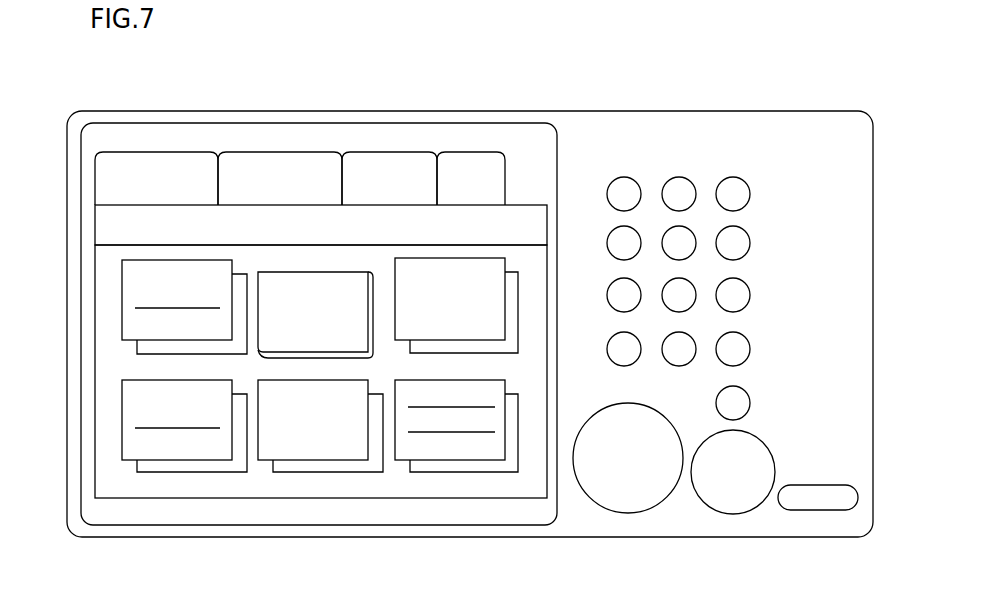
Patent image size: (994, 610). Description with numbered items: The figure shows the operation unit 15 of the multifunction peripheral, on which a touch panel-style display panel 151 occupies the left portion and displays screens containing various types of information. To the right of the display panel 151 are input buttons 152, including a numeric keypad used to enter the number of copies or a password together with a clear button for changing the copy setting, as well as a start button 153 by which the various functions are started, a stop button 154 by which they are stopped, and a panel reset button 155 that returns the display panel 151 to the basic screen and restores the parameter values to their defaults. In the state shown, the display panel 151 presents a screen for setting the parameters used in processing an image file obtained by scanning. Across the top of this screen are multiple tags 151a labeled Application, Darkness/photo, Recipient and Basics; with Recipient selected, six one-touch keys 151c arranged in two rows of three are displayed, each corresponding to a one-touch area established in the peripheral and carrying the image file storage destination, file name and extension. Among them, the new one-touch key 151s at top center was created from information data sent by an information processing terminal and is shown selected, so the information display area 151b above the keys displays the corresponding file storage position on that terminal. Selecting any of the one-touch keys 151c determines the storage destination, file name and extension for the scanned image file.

The operation unit 15 is at (621, 110).
The display panel 151 is at (499, 512).
The tags 151a is at (453, 160).
The information display area 151b is at (108, 233).
The one-touch keys 151c is at (115, 488).
The new one-touch key 151s is at (257, 343).
The input buttons 152 is at (765, 163).
The start button 153 is at (628, 495).
The stop button 154 is at (733, 500).
The panel reset button 155 is at (823, 510).